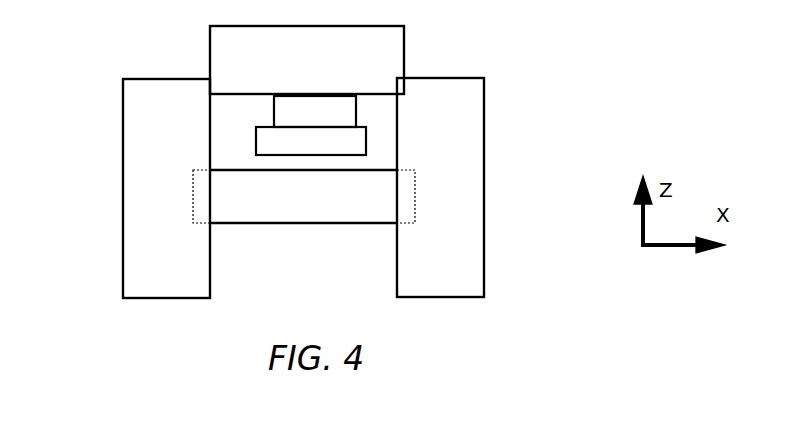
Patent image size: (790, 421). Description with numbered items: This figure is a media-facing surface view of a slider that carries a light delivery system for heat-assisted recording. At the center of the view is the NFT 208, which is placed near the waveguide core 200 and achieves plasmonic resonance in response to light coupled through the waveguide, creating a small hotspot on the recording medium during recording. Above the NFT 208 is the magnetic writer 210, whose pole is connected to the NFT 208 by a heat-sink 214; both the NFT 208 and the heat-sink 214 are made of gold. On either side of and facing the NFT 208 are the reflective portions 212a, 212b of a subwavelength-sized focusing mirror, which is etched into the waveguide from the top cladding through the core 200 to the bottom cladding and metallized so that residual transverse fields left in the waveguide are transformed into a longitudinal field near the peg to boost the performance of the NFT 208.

The waveguide core 200 is at (302, 219).
The NFT 208 is at (311, 141).
The magnetic writer 210 is at (405, 52).
The reflective portion 212a is at (131, 152).
The reflective portion 212b is at (480, 190).
The heat-sink 214 is at (273, 104).